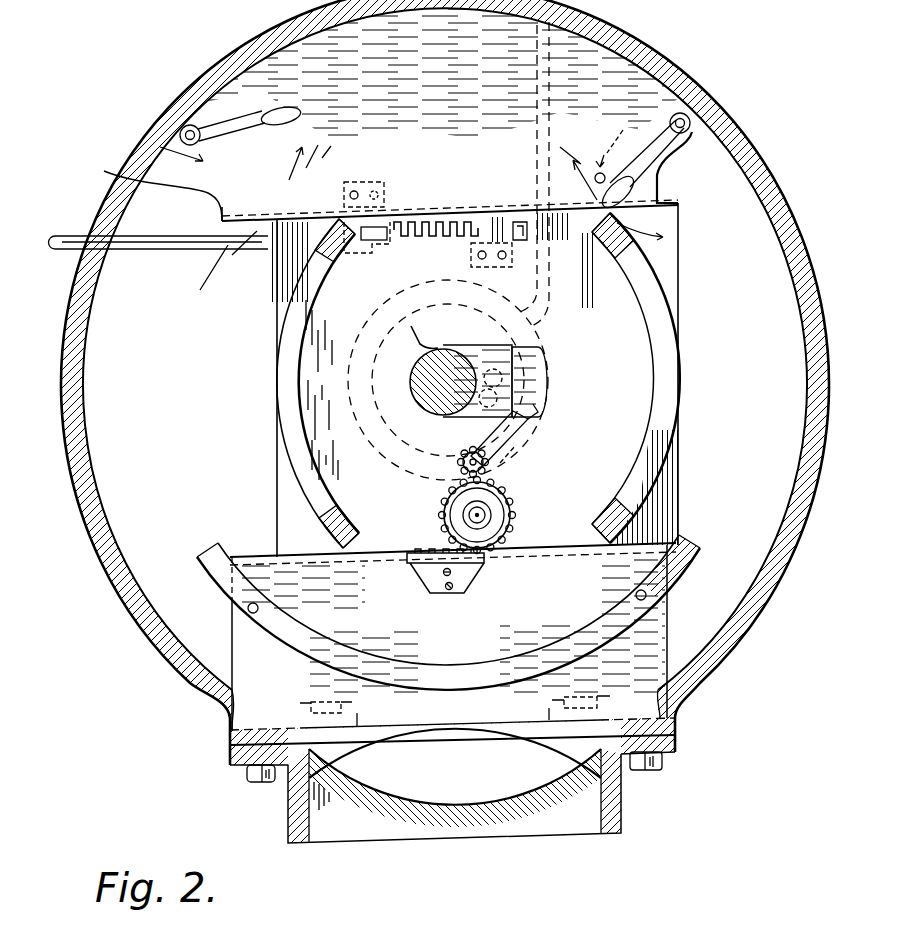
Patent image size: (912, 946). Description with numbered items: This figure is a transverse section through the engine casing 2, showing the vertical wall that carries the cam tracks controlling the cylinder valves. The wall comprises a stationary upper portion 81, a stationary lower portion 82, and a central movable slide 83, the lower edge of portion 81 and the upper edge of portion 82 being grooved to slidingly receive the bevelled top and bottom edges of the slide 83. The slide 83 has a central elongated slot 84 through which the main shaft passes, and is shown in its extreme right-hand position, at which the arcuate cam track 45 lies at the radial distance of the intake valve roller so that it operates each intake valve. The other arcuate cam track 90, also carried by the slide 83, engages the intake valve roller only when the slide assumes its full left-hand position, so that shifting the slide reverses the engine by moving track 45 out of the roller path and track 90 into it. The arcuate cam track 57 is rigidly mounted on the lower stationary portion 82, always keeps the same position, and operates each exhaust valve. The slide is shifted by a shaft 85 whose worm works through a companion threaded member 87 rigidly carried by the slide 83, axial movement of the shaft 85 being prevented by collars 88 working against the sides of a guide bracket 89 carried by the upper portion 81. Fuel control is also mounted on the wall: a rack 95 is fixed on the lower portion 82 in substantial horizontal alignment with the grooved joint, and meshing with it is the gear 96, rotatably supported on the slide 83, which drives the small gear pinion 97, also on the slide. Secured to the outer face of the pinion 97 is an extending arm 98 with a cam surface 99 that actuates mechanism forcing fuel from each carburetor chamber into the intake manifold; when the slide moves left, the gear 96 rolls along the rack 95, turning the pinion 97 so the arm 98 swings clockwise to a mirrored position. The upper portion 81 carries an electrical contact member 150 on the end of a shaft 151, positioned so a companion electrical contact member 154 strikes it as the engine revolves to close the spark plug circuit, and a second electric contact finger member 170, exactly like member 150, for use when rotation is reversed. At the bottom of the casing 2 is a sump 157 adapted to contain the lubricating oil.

The casing 2 is at (252, 40).
The electric contact finger member 170 is at (181, 162).
The shaft 85 is at (134, 250).
The guide bracket 89 is at (360, 182).
The stationary upper portion 81 is at (482, 118).
The companion electrical contact member 154 is at (596, 155).
The shaft 151 is at (692, 122).
The electrical contact member 150 is at (655, 177).
The slide 83 is at (679, 260).
The arcuate cam track 90 is at (655, 315).
The arcuate cam track 45 is at (300, 312).
The central elongated slot 84 is at (546, 358).
The collars 88 is at (386, 258).
The threaded member 87 is at (470, 250).
The extending arm 98 is at (490, 427).
The cam surface 99 is at (536, 431).
The small gear pinion 97 is at (488, 466).
The gear 96 is at (513, 507).
The rack 95 is at (409, 563).
The arcuate cam track 57 is at (403, 672).
The stationary lower portion 82 is at (541, 703).
The sump 157 is at (534, 817).